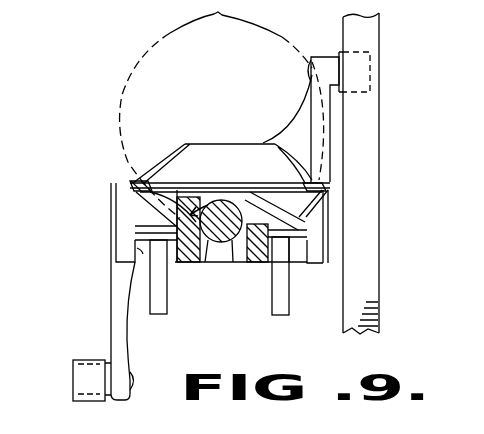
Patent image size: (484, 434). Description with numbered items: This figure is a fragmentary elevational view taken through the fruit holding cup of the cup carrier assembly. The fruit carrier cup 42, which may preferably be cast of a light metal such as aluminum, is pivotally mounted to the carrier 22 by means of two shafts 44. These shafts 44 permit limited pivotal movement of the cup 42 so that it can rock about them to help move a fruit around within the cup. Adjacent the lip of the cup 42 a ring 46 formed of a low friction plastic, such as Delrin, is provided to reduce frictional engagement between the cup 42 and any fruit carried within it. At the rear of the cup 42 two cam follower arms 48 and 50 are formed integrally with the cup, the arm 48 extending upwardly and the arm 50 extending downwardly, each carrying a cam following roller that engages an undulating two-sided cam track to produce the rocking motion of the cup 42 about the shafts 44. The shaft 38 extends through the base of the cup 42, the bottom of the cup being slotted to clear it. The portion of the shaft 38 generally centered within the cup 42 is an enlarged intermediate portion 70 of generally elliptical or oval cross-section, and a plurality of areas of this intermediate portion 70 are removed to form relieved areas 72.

The carrier 22 is at (268, 305).
The shaft 38 is at (212, 262).
The fruit carrier cup 42 is at (132, 184).
The shafts 44 is at (133, 260).
The ring 46 is at (135, 182).
The cam follower arm 48 is at (330, 126).
The cam follower arm 50 is at (115, 297).
The intermediate portion 70 is at (218, 205).
The relieved areas 72 is at (318, 190).